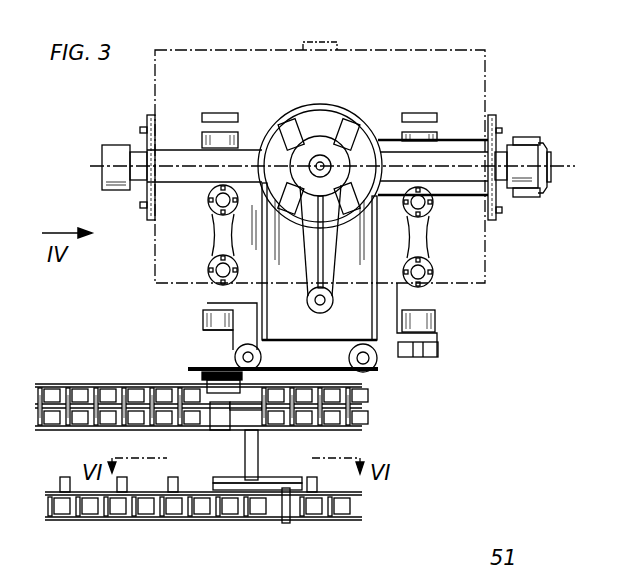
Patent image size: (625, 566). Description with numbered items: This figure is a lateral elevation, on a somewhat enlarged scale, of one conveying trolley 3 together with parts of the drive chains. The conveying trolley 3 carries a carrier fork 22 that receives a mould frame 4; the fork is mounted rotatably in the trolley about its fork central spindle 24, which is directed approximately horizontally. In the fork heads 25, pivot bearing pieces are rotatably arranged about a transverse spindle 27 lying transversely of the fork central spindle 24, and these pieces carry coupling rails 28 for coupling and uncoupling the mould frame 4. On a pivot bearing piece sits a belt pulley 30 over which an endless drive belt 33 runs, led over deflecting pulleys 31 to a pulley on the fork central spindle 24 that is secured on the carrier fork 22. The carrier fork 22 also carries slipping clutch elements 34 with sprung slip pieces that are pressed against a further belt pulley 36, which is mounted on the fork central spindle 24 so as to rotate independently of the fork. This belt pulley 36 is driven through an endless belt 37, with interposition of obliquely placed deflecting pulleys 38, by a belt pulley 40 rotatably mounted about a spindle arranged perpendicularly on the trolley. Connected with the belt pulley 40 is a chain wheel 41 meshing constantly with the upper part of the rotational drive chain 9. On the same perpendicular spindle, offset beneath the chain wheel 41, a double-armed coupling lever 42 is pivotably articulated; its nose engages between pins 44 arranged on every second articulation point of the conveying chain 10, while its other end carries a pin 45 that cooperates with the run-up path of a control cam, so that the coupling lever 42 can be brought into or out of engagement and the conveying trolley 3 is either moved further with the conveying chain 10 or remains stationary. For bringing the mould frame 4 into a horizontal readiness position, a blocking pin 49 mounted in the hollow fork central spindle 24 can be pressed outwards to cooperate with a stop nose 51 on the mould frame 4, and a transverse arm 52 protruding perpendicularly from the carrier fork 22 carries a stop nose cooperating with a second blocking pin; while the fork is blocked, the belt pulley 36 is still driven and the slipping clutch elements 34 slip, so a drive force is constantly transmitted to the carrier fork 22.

The conveying trolley 3 is at (441, 287).
The mould frame 4 is at (485, 82).
The rotational drive chain 9 is at (58, 408).
The conveying chain 10 is at (68, 503).
The carrier fork 22 is at (172, 153).
The fork central spindle 24 is at (318, 163).
The fork heads 25 is at (110, 150).
The transverse spindle 27 is at (188, 166).
The coupling rails 28 is at (500, 222).
The belt pulley 30 is at (552, 165).
The deflecting pulleys 31 is at (528, 137).
The endless drive belt 33 is at (453, 140).
The slipping clutch elements 34 is at (350, 125).
The belt pulley 36 is at (340, 104).
The endless belt 37 is at (260, 293).
The deflecting pulleys 38 is at (243, 352).
The belt pulley 40 is at (193, 363).
The chain wheel 41 is at (202, 430).
The coupling lever 42 is at (275, 483).
The pins 44 is at (172, 478).
The pin 45 is at (287, 522).
The blocking pin 49 is at (377, 203).
The stop nose 51 is at (335, 49).
The transverse arm 52 is at (332, 258).